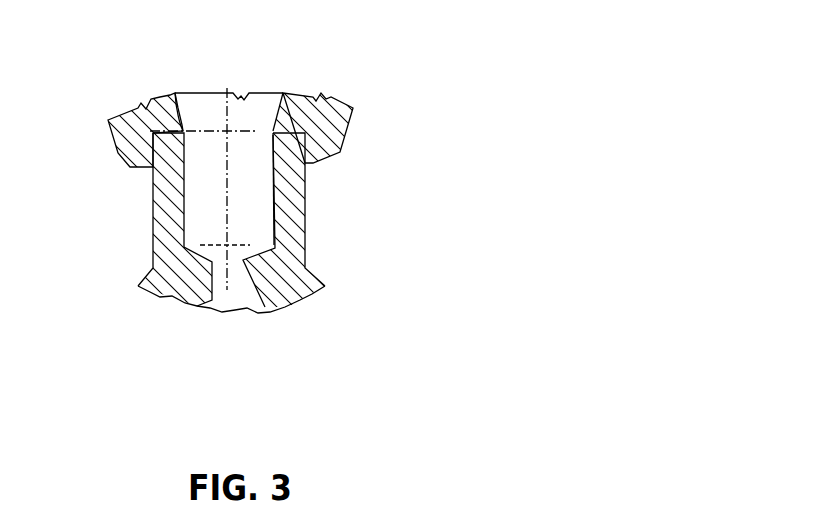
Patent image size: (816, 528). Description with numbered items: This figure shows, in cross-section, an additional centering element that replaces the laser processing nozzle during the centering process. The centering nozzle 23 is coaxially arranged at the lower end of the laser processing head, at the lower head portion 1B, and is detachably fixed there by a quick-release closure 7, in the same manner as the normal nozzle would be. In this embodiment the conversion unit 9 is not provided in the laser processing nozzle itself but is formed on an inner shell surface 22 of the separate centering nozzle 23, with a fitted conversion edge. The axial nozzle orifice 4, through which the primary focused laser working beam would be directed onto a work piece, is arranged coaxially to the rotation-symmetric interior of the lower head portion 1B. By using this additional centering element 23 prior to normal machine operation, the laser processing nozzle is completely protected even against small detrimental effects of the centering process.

The lower head portion 1B is at (307, 137).
The quick-release closure 7 is at (153, 136).
The conversion unit 9 is at (213, 243).
The centering nozzle 23 is at (292, 188).
The inner shell surface 22 is at (272, 170).
The nozzle orifice 4 is at (243, 258).